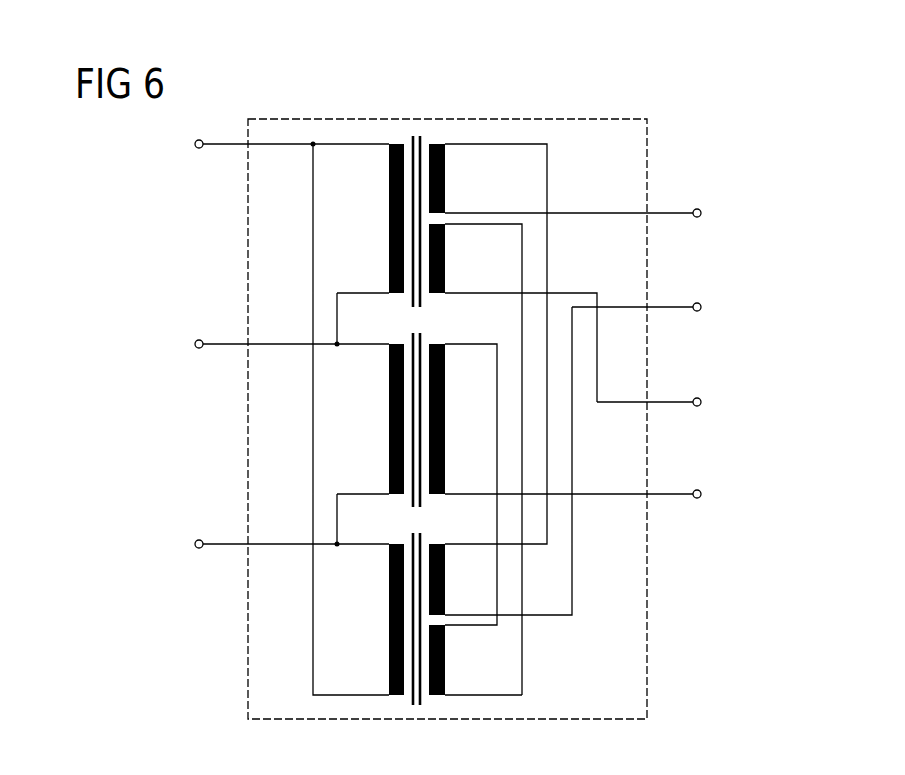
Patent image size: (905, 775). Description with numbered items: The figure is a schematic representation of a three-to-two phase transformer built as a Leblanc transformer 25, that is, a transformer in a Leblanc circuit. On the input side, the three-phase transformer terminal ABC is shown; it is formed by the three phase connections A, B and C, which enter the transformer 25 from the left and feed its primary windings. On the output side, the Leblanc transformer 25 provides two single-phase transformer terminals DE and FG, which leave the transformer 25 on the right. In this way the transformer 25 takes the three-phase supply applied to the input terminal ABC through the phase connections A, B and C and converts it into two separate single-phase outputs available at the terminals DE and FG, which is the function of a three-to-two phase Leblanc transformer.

The Leblanc transformer 25 is at (248, 453).
The phase A input terminal A is at (194, 146).
The phase B input terminal B is at (194, 346).
The phase C input terminal C is at (194, 546).
The three-phase transformer terminal ABC is at (217, 359).
The single-phase transformer terminal DE is at (698, 261).
The single-phase transformer terminal FG is at (698, 452).